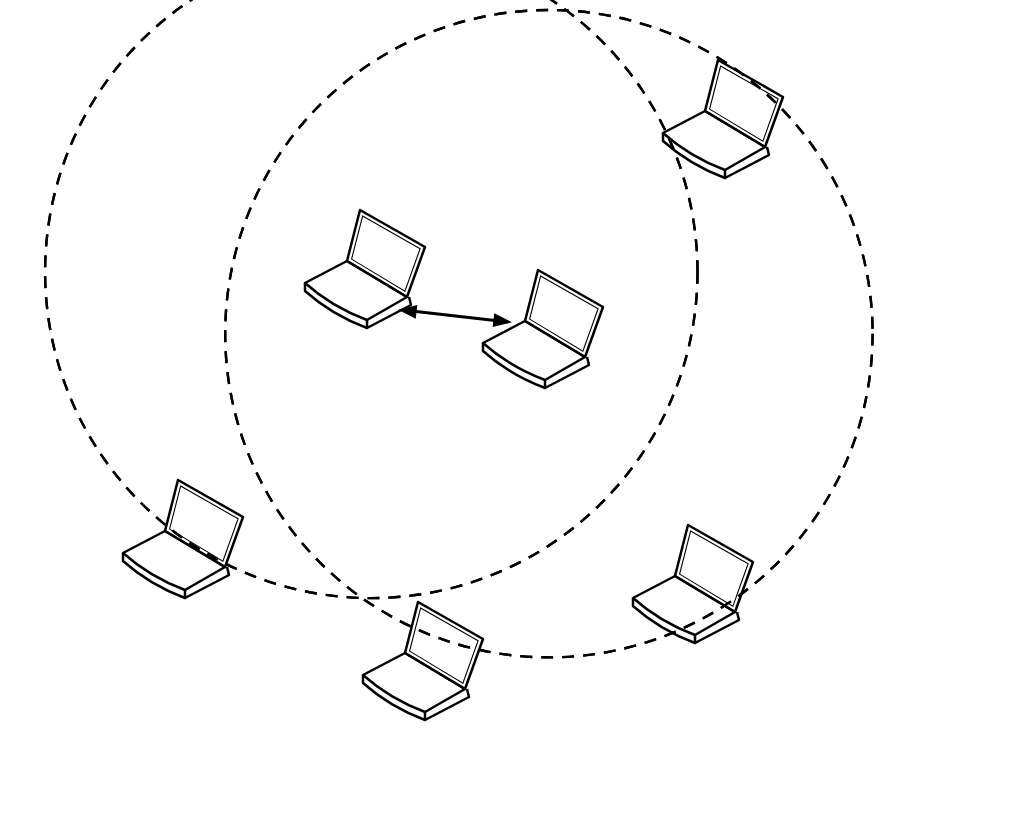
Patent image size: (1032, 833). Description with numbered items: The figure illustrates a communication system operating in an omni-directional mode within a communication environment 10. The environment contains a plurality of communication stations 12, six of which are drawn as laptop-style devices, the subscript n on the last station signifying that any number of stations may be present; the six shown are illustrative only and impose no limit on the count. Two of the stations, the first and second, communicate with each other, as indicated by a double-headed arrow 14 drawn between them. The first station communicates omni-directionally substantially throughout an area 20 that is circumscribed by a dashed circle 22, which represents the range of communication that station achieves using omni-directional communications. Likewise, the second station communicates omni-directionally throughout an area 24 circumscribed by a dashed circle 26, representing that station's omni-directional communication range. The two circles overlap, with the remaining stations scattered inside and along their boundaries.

The communication environment 10 is at (472, 360).
The communication stations 12 is at (467, 384).
The arrow 14 is at (461, 320).
The area 20 is at (102, 427).
The circle 22 is at (62, 381).
The area 24 is at (836, 222).
The circle 26 is at (866, 266).